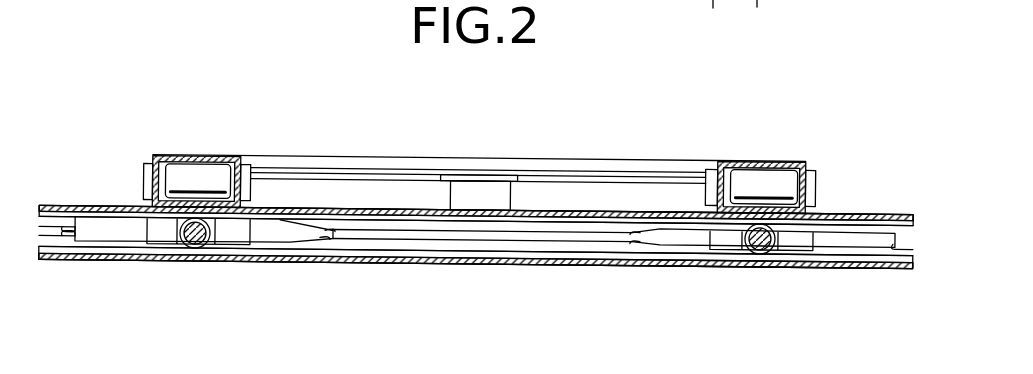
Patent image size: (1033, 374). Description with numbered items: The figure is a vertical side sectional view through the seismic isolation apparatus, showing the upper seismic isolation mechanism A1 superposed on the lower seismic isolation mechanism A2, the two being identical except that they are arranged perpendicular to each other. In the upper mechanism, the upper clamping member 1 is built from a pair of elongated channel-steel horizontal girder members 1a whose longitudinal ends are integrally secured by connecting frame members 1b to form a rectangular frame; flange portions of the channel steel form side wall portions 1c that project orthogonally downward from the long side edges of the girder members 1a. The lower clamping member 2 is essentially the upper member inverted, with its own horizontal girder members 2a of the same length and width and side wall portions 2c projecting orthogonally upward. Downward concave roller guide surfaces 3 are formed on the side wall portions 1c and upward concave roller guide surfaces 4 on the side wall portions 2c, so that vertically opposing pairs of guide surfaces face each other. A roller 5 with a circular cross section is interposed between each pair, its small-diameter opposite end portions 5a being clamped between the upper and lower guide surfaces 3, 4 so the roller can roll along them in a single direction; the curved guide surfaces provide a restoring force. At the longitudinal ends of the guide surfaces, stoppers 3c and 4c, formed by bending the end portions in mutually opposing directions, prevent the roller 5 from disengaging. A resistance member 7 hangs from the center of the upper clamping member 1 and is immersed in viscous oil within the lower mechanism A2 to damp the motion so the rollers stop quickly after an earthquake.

The upper clamping member 1 is at (476, 168).
The horizontal girder member 1a is at (785, 160).
The connecting frame member 1b is at (572, 158).
The side wall portion 1c is at (704, 214).
The lower clamping member 2 is at (616, 232).
The horizontal girder member 2a is at (815, 200).
The side wall portion 2c is at (568, 266).
The upper roller guide surface 3 is at (153, 160).
The stopper 3c is at (68, 214).
The lower roller guide surface 4 is at (800, 222).
The stopper 4c is at (80, 264).
The roller 5 is at (207, 178).
The small-diameter opposite end portion 5a is at (148, 178).
The resistance member 7 is at (490, 200).
The upper seismic isolation mechanism A1 is at (358, 148).
The lower seismic isolation mechanism A2 is at (366, 277).